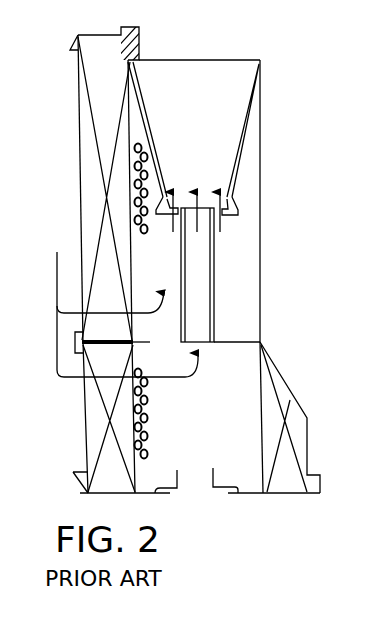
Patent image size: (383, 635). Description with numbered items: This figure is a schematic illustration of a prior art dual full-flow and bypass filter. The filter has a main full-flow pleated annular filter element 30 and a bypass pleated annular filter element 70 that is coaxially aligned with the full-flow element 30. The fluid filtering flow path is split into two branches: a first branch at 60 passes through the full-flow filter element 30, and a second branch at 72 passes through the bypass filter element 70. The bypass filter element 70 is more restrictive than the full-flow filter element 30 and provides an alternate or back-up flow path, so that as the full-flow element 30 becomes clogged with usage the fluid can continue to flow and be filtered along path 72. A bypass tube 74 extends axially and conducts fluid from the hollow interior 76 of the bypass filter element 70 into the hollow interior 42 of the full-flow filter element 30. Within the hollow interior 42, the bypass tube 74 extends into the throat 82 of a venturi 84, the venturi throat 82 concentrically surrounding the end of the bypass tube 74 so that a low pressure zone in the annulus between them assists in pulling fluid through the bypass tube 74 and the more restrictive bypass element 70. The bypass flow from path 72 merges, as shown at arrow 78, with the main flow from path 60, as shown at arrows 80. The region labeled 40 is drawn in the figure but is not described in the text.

The main full-flow pleated annular filter element 30 is at (100, 104).
The first flow passage 40 is at (134, 247).
The hollow interior of full-flow filter element 42 is at (248, 288).
The first branch flow path 60 is at (107, 313).
The bypass pleated annular filter element 70 is at (92, 419).
The second branch flow path 72 is at (110, 377).
The bypass tube 74 is at (215, 322).
The hollow interior of bypass filter element 76 is at (203, 434).
The bypass flow merge arrow 78 is at (200, 200).
The main flow arrows 80 is at (176, 200).
The venturi throat 82 is at (163, 202).
The venturi 84 is at (246, 148).